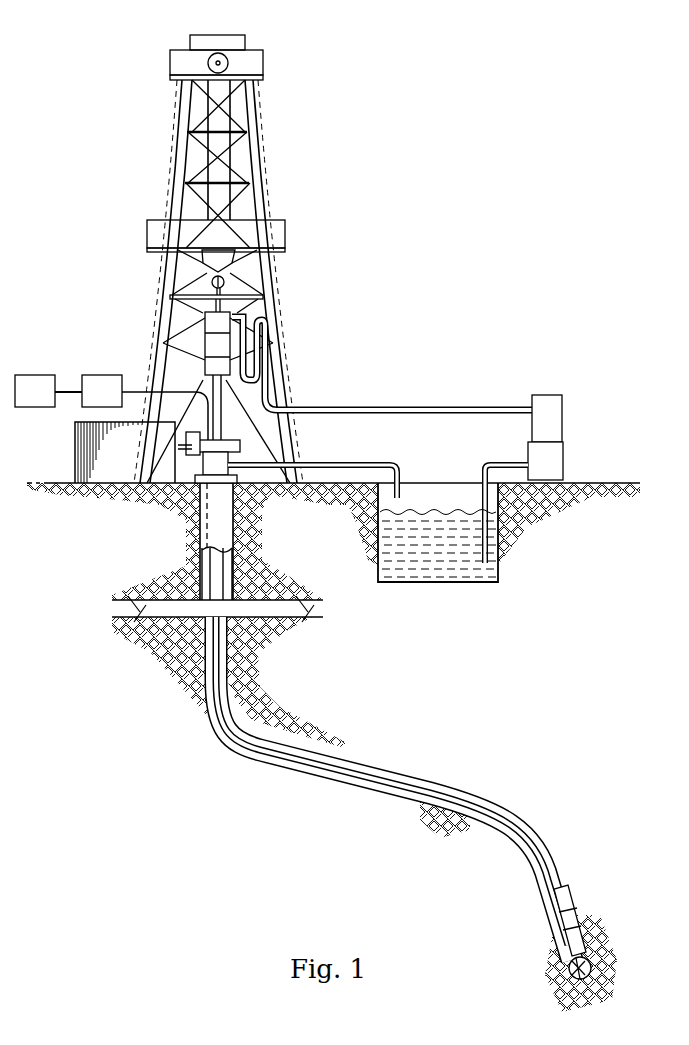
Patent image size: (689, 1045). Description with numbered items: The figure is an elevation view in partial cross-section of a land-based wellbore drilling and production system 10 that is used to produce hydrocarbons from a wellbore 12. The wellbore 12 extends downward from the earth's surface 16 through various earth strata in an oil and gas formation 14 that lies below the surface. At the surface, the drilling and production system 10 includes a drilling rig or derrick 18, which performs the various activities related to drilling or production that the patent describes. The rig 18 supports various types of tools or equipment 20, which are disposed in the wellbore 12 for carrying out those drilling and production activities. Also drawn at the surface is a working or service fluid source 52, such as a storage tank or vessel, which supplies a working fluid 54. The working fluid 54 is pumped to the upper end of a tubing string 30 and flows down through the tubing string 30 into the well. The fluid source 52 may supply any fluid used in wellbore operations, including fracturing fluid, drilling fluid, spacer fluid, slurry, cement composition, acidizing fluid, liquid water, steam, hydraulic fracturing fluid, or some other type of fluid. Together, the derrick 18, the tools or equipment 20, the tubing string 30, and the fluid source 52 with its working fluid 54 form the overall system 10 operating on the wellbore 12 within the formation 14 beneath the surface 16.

The wellbore drilling and production system 10 is at (88, 64).
The wellbore 12 is at (256, 764).
The oil and gas formation 14 is at (348, 678).
The earth's surface 16 is at (600, 483).
The drilling rig or derrick 18 is at (255, 158).
The tools or equipment 20 is at (386, 768).
The tubing string 30 is at (228, 572).
The working or service fluid source 52 is at (440, 584).
The working fluid 54 is at (432, 517).